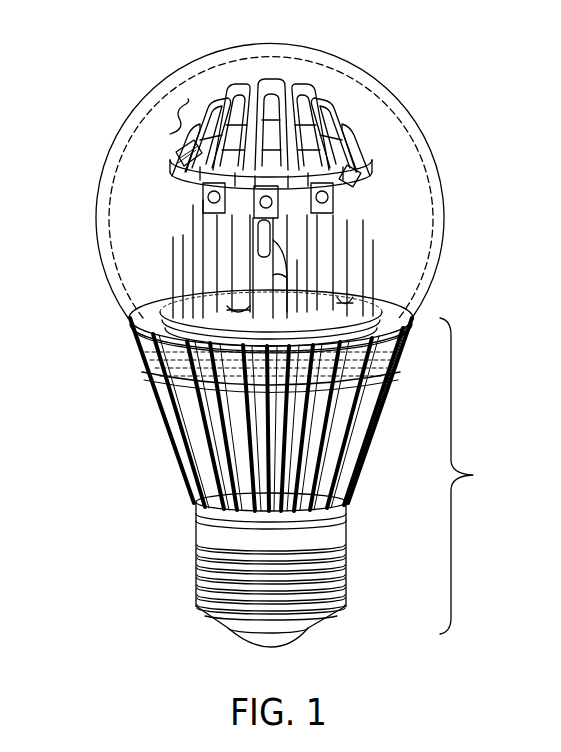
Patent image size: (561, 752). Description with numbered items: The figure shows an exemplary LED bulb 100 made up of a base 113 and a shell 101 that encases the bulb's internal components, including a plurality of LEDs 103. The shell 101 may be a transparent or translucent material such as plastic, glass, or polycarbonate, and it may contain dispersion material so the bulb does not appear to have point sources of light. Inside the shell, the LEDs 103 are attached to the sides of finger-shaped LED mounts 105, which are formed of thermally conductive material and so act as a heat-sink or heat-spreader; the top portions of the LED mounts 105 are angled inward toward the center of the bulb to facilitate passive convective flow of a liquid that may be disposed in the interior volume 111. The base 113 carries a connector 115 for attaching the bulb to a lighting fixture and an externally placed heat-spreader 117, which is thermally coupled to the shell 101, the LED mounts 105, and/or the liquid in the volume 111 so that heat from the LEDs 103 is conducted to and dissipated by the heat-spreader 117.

The LED bulb 100 is at (474, 57).
The shell 101 is at (97, 251).
The LEDs 103 is at (180, 160).
The LED mounts 105 is at (173, 237).
The volume 111 is at (173, 117).
The base 113 is at (475, 476).
The connector 115 is at (191, 565).
The heat-spreader 117 is at (158, 422).